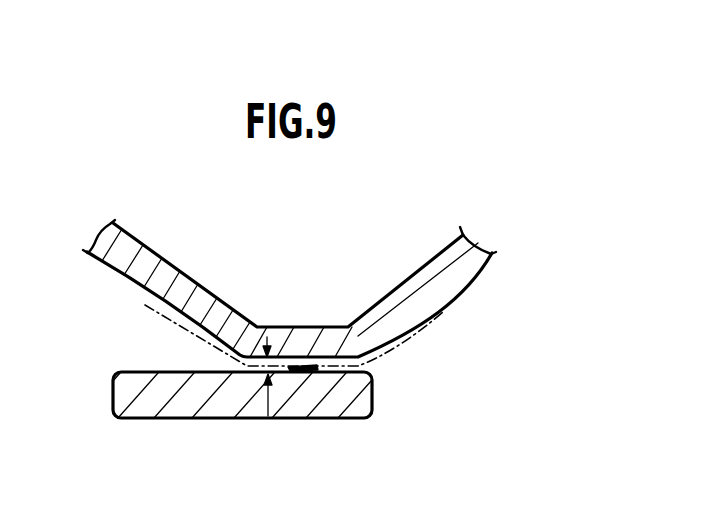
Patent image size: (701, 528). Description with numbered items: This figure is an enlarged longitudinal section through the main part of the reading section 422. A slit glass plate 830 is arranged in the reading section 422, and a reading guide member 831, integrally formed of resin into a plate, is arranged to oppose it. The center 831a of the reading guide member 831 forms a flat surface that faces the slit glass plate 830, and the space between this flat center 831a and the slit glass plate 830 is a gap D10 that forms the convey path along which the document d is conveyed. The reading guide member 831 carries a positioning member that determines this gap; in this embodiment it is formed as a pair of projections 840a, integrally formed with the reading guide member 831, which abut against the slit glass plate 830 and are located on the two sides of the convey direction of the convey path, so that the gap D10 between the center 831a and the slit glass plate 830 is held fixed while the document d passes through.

The reading guide member 831 is at (289, 288).
The center of the reading guide member 831a is at (316, 331).
The slit glass plate 830 is at (212, 408).
The projection 840a is at (302, 371).
The reading section 422 is at (227, 446).
The gap D10 is at (268, 416).
The document d is at (423, 330).